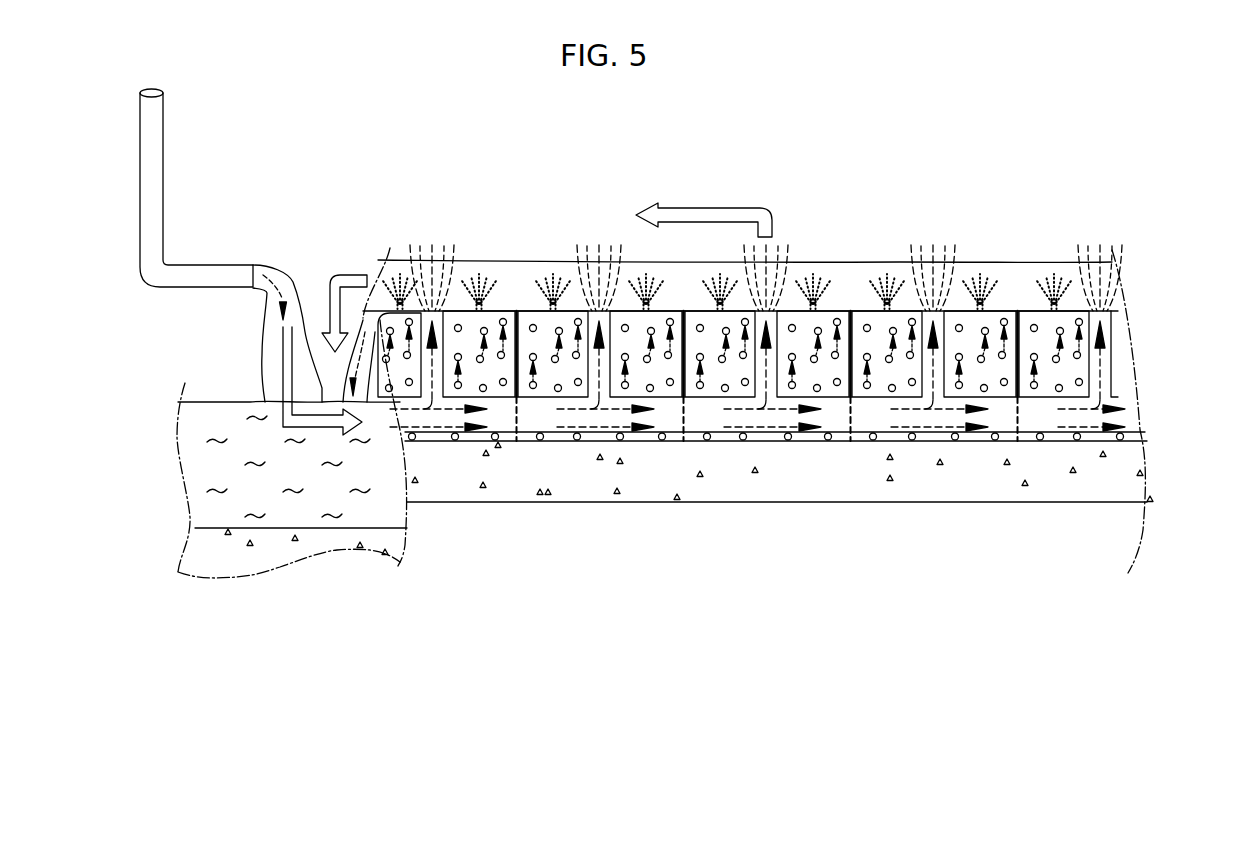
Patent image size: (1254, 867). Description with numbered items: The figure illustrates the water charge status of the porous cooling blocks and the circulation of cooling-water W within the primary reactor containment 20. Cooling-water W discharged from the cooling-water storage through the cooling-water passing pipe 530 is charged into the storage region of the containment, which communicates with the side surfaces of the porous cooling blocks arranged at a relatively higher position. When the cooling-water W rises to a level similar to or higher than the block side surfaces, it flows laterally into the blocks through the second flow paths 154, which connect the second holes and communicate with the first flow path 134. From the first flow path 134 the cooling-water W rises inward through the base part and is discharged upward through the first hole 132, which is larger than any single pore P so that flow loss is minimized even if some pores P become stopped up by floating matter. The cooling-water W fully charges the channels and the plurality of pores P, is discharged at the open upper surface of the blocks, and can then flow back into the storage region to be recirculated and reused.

The cooling-water passing pipe 530 is at (161, 158).
The first hole 132 is at (945, 288).
The first flow path 134 is at (1100, 357).
The second flow paths 154 is at (1092, 407).
The primary reactor containment 20 is at (930, 490).
The pore P is at (836, 322).
The cooling-water W is at (283, 274).